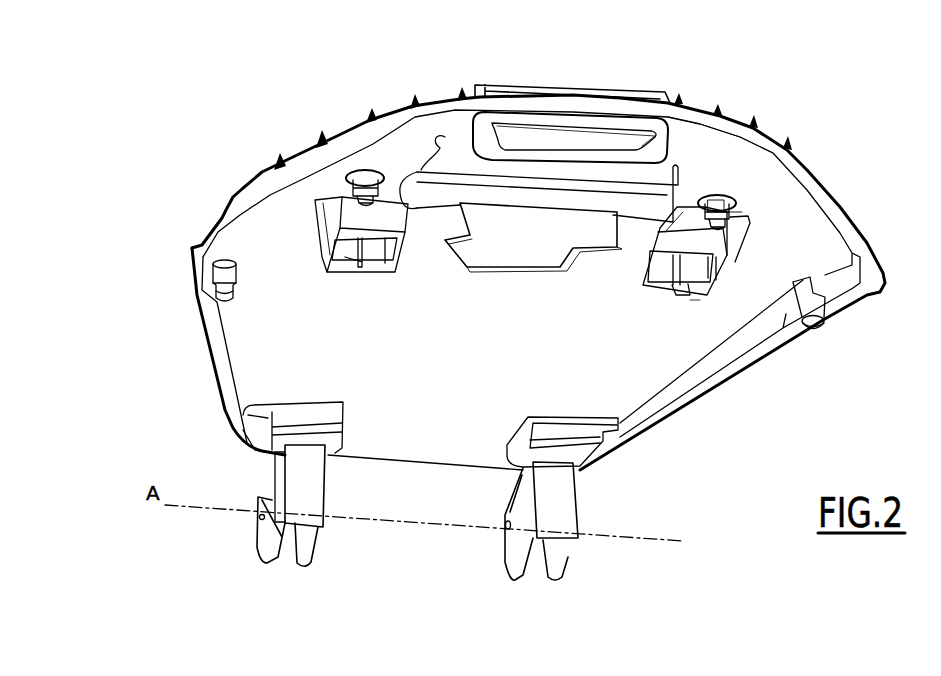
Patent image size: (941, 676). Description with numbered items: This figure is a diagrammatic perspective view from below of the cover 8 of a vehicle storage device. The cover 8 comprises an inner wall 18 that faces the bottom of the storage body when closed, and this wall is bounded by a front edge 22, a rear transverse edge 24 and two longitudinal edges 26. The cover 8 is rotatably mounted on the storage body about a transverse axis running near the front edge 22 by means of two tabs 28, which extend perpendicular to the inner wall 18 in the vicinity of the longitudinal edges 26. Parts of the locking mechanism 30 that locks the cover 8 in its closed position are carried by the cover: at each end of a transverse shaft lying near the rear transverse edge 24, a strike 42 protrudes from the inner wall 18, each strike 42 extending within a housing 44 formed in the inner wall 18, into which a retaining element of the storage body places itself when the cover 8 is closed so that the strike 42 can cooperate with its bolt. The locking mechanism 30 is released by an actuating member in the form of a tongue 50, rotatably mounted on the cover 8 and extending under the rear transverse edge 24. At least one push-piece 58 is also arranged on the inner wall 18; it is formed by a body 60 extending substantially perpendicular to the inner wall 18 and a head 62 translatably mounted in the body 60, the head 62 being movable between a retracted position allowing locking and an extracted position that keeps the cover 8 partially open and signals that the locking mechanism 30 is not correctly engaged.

The cover 8 is at (188, 324).
The inner wall 18 is at (243, 375).
The front edge 22 is at (435, 450).
The rear transverse edge 24 is at (694, 130).
The longitudinal edges 26 is at (776, 344).
The tabs 28 is at (320, 487).
The locking mechanism 30 is at (695, 298).
The strike 42 is at (367, 258).
The housing 44 is at (328, 252).
The tongue 50 is at (567, 136).
The push-piece 58 is at (354, 178).
The body 60 is at (713, 208).
The head 62 is at (729, 218).